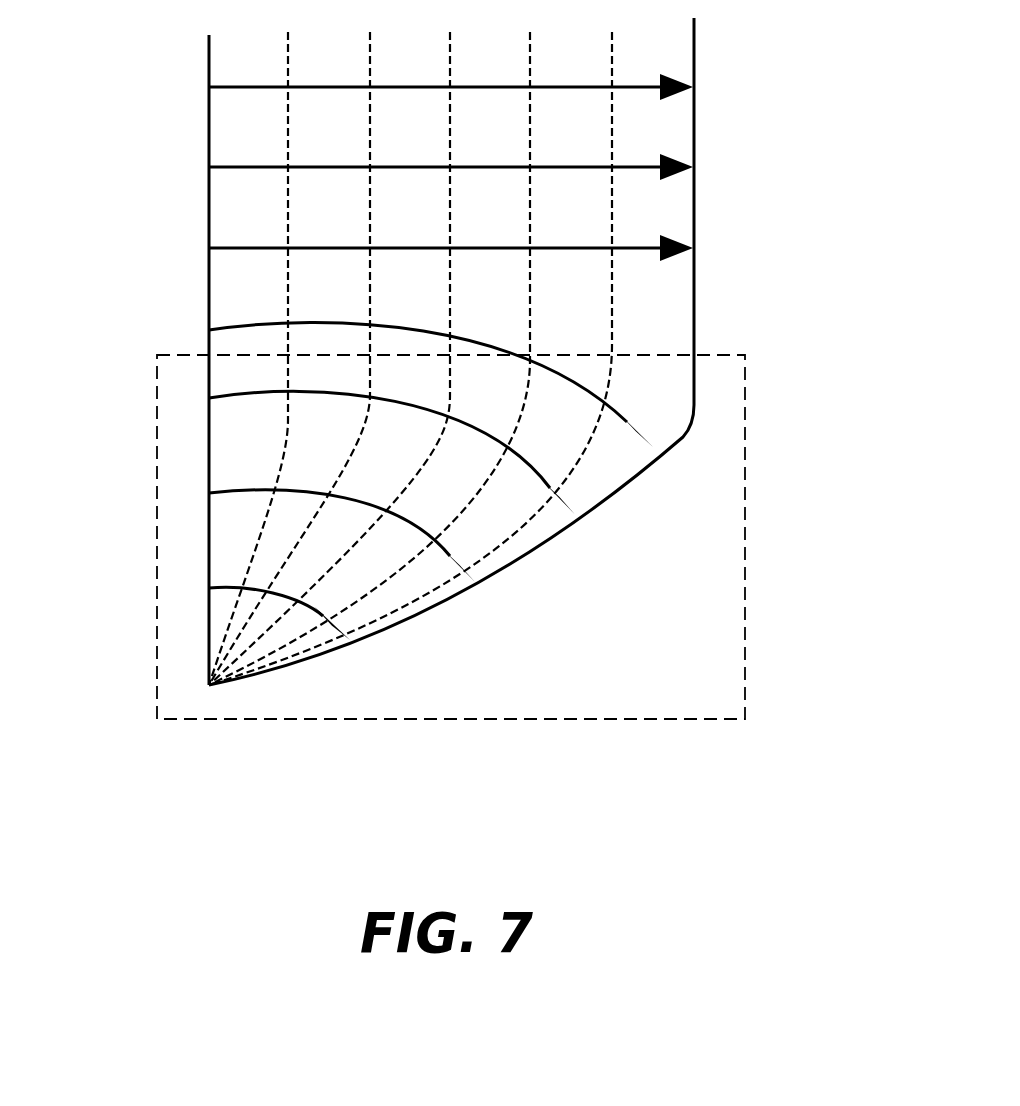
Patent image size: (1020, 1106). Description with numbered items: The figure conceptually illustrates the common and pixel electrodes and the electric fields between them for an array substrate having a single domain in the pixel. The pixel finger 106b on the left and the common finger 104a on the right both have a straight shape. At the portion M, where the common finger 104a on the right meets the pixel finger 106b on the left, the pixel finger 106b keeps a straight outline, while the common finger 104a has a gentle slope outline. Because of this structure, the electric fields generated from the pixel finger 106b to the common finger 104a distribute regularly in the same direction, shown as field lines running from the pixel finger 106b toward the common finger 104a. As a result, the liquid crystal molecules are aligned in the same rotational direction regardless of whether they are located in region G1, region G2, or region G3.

The common finger 104a is at (694, 417).
The pixel finger 106b is at (209, 445).
The portion M is at (450, 719).
The region G1 is at (451, 167).
The region G2 is at (342, 565).
The region G3 is at (431, 424).